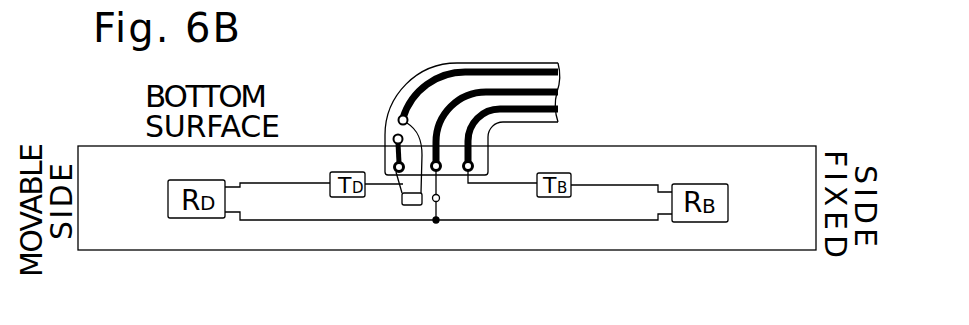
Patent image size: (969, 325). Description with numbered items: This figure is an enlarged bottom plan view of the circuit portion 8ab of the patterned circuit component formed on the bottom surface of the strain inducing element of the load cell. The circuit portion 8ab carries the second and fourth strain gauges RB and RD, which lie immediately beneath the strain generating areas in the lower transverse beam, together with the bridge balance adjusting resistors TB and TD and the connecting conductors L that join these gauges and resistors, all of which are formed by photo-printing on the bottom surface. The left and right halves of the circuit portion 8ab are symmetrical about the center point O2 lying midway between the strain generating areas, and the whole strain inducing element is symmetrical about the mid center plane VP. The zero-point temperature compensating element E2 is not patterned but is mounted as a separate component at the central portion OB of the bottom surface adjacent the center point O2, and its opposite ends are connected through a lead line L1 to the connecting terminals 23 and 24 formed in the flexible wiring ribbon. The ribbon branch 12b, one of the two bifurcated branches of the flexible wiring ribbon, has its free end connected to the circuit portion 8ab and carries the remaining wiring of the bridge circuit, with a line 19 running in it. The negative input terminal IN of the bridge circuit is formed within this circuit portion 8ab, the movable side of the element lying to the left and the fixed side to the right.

The circuit portion 8ab is at (730, 158).
The ribbon branch 12b is at (503, 63).
The signal line 19 is at (418, 88).
The lead line L1 is at (406, 102).
The connecting conductor L is at (632, 185).
The connecting terminal 24 is at (399, 117).
The connecting terminal 23 is at (394, 136).
The zero-point temperature compensating element E2 is at (405, 207).
The central portion OB is at (420, 207).
The mid center plane VP is at (436, 227).
The center point O2 is at (440, 199).
The negative input terminal IN is at (437, 222).